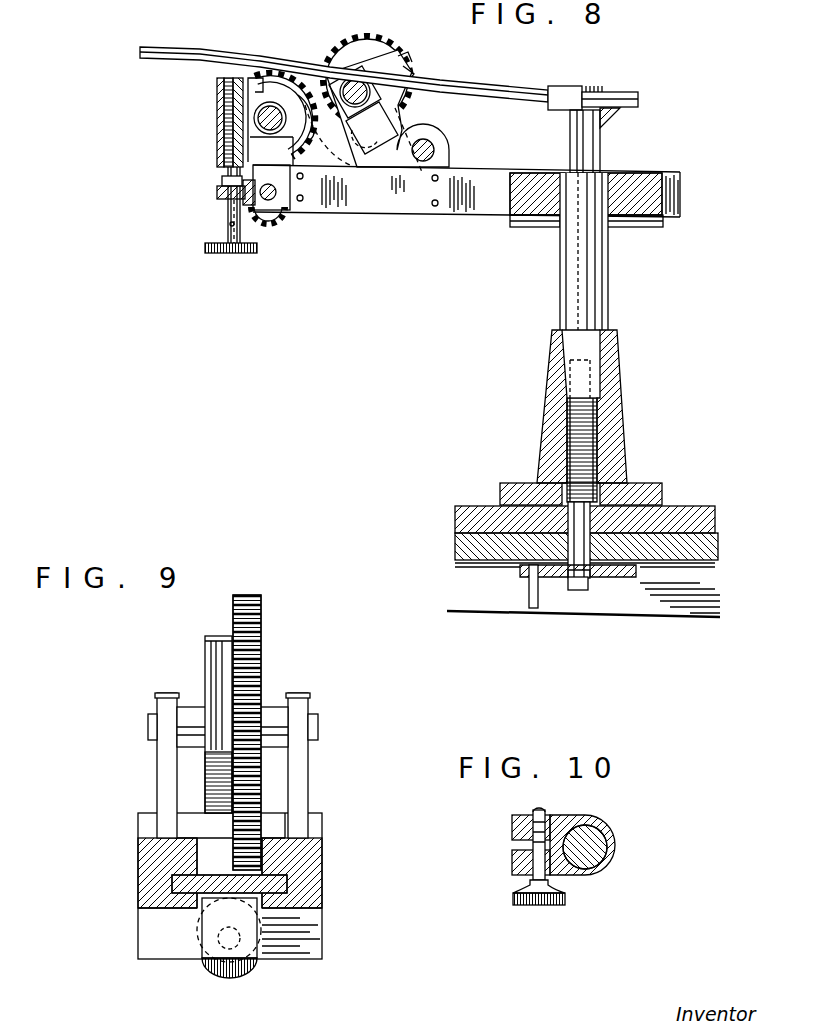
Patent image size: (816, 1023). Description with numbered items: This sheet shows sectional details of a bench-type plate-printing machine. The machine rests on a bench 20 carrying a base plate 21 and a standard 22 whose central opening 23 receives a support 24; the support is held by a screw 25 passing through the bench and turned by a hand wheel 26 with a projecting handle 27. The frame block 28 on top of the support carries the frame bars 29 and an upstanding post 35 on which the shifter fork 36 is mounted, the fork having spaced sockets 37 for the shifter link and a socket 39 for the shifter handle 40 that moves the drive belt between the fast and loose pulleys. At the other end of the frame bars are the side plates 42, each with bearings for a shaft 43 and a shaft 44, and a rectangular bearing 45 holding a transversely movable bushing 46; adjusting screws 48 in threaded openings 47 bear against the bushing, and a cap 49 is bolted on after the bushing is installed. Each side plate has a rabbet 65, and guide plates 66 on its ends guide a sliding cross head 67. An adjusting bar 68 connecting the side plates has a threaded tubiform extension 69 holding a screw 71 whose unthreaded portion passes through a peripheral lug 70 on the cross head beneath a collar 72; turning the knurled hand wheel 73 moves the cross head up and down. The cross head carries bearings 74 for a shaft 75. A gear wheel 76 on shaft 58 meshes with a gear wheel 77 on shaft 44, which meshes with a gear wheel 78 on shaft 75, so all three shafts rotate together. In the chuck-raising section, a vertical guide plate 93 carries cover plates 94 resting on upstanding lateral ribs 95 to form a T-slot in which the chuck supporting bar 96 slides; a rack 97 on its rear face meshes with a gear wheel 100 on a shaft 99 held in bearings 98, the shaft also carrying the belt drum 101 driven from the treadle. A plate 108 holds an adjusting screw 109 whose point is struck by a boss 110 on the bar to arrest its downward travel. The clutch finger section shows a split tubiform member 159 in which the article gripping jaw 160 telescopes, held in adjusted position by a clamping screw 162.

In FIG. 8, the bench 20 is at (467, 620).
In FIG. 8, the base plate 21 is at (478, 510).
In FIG. 8, the standard 22 is at (620, 398).
In FIG. 8, the centrally disposed opening 23 is at (604, 452).
In FIG. 8, the support 24 is at (566, 300).
In FIG. 8, the screw 25 is at (581, 594).
In FIG. 8, the hand wheel 26 is at (628, 580).
In FIG. 8, the handle 27 is at (530, 600).
In FIG. 8, the frame block 28 is at (548, 226).
In FIG. 8, the frame bar 29 is at (491, 202).
In FIG. 8, the post 35 is at (570, 134).
In FIG. 8, the shifter fork 36 is at (592, 86).
In FIG. 8, the spaced sockets 37 is at (630, 86).
In FIG. 8, the socket 39 is at (552, 86).
In FIG. 8, the shifter handle 40 is at (173, 50).
In FIG. 8, the side plate 42 is at (383, 210).
In FIG. 8, the shaft 43 is at (432, 142).
In FIG. 8, the shaft 44 is at (272, 104).
In FIG. 8, the bearing 45 is at (404, 100).
In FIG. 8, the bushing or brass 46 is at (384, 52).
In FIG. 8, the threaded openings 47 is at (366, 152).
In FIG. 8, the adjusting screws 48 is at (410, 76).
In FIG. 8, the cap 49 is at (398, 62).
In FIG. 8, the shaft 58 is at (355, 77).
In FIG. 8, the rabbet 65 is at (266, 176).
In FIG. 8, the guide plates 66 is at (217, 192).
In FIG. 8, the cross head 67 is at (230, 128).
In FIG. 8, the adjusting bar 68 is at (249, 78).
In FIG. 8, the tubiform extension 69 is at (217, 110).
In FIG. 8, the peripheral lug 70 is at (228, 208).
In FIG. 8, the screw 71 is at (236, 78).
In FIG. 8, the collar 72 is at (222, 181).
In FIG. 8, the hand wheel 73 is at (219, 255).
In FIG. 8, the bearings 74 is at (288, 214).
In FIG. 8, the shaft 75 is at (275, 226).
In FIG. 8, the gear wheel 76 is at (371, 36).
In FIG. 8, the gear wheel 77 is at (300, 80).
In FIG. 8, the gear wheel 78 is at (260, 225).
In FIG. 9, the vertical guide plate 93 is at (322, 862).
In FIG. 9, the cover plates 94 is at (150, 910).
In FIG. 9, the upstanding lateral ribs 95 is at (172, 887).
In FIG. 9, the chuck supporting bar 96 is at (150, 870).
In FIG. 9, the rack 97 is at (242, 884).
In FIG. 9, the bearings 98 is at (157, 773).
In FIG. 9, the shaft 99 is at (318, 728).
In FIG. 9, the gear wheel 100 is at (262, 644).
In FIG. 9, the belt wheel or drum 101 is at (205, 656).
In FIG. 9, the plate 108 is at (156, 950).
In FIG. 9, the adjusting screw 109 is at (226, 972).
In FIG. 9, the boss 110 is at (246, 948).
In FIG. 10, the split tubiform member 159 is at (617, 848).
In FIG. 10, the article gripping jaw 160 is at (590, 870).
In FIG. 10, the clamping screw 162 is at (540, 908).